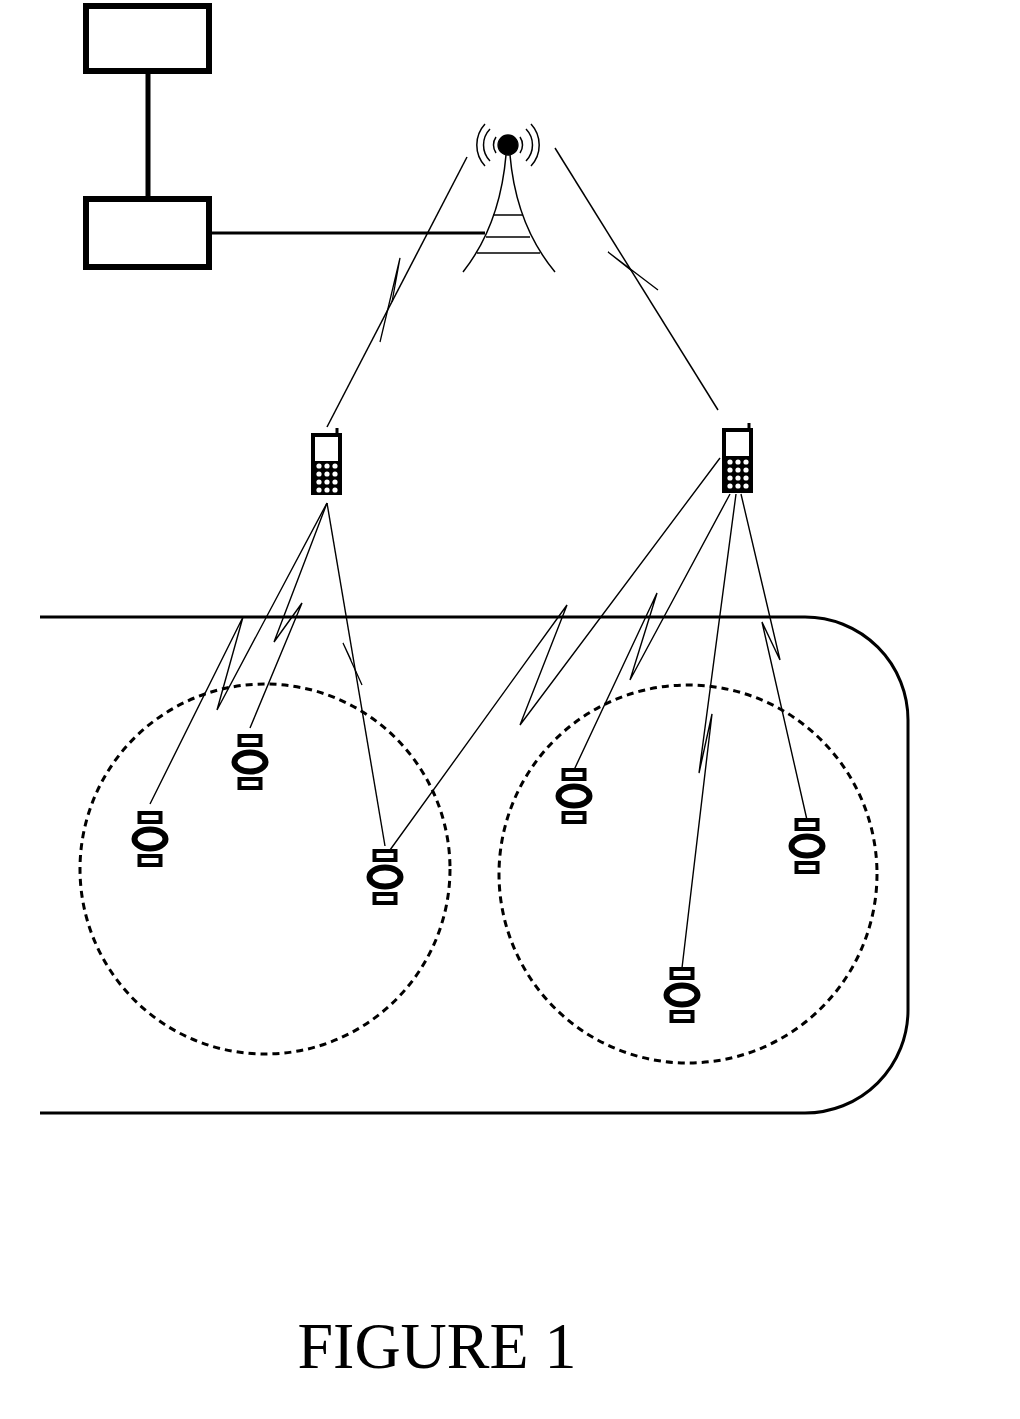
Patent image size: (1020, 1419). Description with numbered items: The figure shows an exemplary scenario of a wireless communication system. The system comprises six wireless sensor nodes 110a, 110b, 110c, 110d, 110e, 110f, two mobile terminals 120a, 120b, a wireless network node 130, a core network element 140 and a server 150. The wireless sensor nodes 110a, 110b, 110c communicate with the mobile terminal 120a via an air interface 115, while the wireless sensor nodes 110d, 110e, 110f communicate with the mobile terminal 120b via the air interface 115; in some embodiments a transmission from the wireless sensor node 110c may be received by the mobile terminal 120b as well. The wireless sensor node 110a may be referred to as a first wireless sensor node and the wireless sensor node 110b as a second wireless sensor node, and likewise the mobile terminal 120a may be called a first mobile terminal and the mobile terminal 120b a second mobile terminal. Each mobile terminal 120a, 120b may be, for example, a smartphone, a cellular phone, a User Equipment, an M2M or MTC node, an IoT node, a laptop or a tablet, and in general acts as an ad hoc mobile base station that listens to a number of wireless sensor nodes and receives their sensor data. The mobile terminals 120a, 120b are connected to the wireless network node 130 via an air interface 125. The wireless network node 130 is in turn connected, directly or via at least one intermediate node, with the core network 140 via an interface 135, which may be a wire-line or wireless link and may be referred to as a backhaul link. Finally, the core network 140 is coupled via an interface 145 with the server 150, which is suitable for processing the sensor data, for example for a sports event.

The wireless sensor node 110a is at (150, 866).
The wireless sensor node 110b is at (250, 790).
The wireless sensor node 110c is at (385, 904).
The wireless sensor node 110d is at (574, 823).
The wireless sensor node 110e is at (661, 995).
The wireless sensor node 110f is at (807, 873).
The air interface 115 is at (268, 606).
The mobile terminal 120a is at (305, 482).
The mobile terminal 120b is at (753, 465).
The air interface 125 is at (352, 371).
The wireless network node 130 is at (497, 258).
The interface 135 is at (312, 230).
The core network 140 is at (124, 249).
The interface 145 is at (150, 108).
The server 150 is at (124, 52).